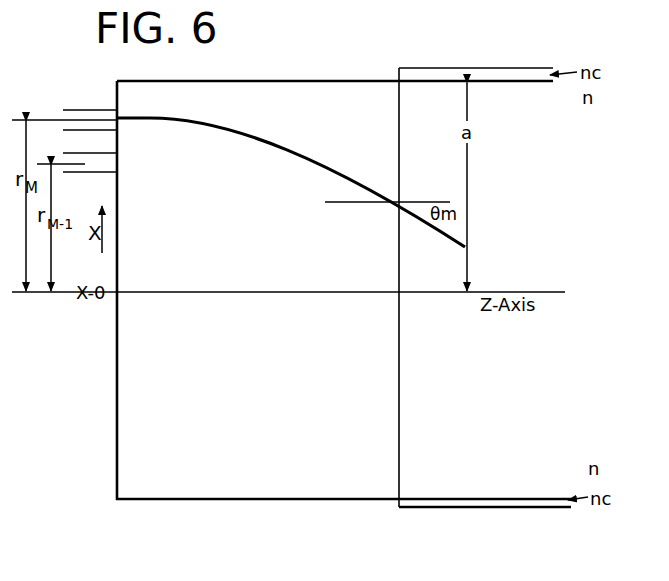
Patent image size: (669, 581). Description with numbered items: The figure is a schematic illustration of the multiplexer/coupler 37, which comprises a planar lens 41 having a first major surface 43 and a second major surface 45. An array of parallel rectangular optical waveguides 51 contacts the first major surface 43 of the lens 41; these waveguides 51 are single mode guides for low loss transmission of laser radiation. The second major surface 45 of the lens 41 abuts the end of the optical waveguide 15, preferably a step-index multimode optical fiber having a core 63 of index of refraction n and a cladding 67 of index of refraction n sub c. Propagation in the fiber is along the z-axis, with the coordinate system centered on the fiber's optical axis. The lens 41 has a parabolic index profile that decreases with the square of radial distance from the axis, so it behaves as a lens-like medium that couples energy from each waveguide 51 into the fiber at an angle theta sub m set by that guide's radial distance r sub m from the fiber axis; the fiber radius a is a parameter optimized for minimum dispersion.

The optical waveguide 15 is at (521, 541).
The multiplexer/coupler 37 is at (100, 359).
The planar lens 41 is at (262, 500).
The first major surface 43 is at (117, 404).
The second major surface 45 is at (399, 390).
The optical waveguides 51 is at (84, 109).
The core 63 is at (523, 368).
The cladding 67 is at (530, 72).